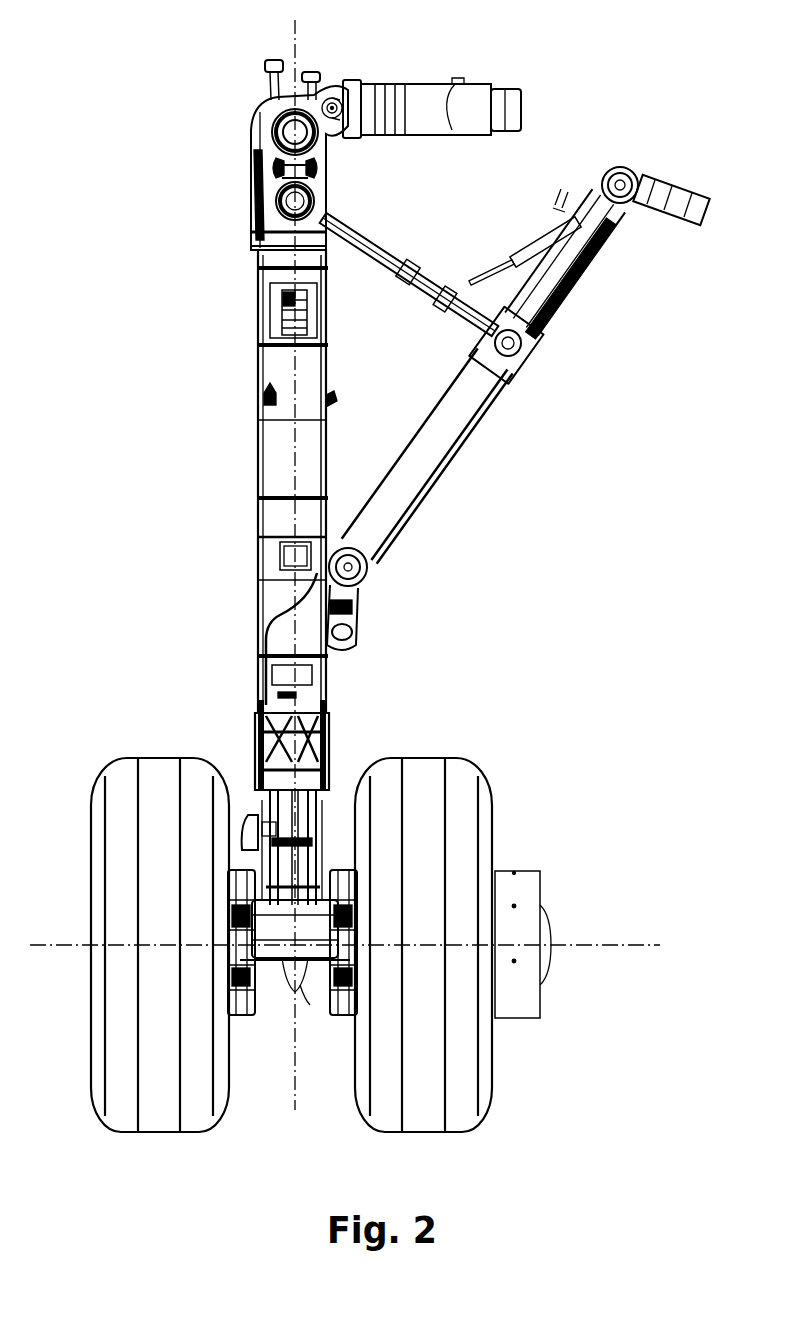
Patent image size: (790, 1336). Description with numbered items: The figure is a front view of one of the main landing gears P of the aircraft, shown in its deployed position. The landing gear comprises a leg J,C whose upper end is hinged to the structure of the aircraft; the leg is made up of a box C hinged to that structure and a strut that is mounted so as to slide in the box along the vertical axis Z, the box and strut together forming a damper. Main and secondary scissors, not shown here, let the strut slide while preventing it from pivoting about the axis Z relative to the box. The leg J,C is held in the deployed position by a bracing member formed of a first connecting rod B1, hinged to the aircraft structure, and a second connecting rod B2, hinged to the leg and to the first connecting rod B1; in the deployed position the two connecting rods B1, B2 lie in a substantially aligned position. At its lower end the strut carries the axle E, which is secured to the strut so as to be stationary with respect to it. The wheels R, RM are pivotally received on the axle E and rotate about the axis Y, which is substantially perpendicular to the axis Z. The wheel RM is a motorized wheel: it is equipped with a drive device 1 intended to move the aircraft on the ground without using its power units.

The axis Z is at (298, 30).
The axis Y is at (657, 945).
The main landing gear P is at (145, 330).
The leg and box J,C is at (257, 450).
The first connecting rod B1 is at (583, 258).
The second connecting rod B2 is at (452, 458).
The wheel R is at (125, 757).
The motorized wheel RM is at (470, 760).
The drive device 1 is at (524, 876).
The axle E is at (312, 996).